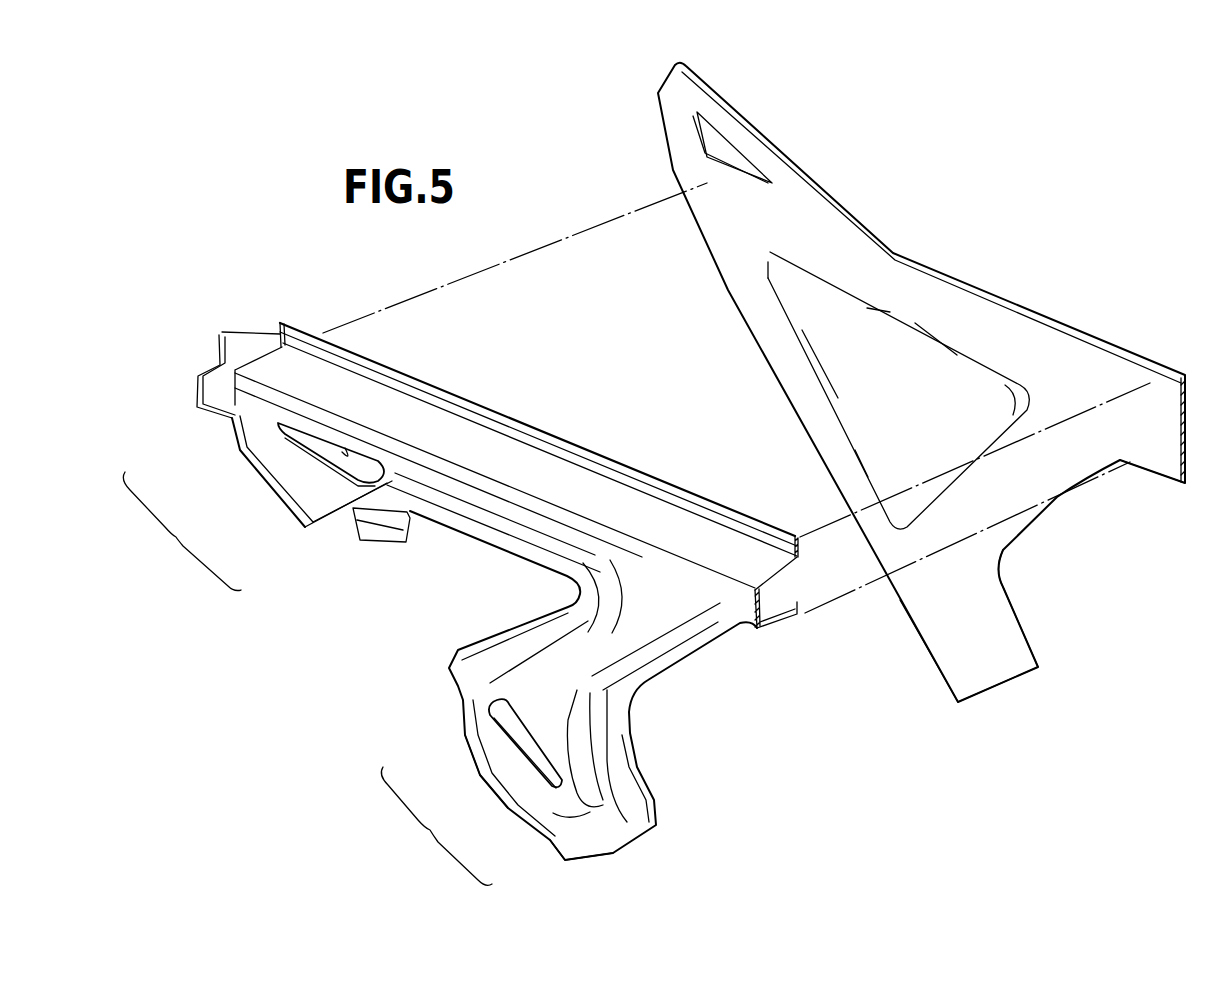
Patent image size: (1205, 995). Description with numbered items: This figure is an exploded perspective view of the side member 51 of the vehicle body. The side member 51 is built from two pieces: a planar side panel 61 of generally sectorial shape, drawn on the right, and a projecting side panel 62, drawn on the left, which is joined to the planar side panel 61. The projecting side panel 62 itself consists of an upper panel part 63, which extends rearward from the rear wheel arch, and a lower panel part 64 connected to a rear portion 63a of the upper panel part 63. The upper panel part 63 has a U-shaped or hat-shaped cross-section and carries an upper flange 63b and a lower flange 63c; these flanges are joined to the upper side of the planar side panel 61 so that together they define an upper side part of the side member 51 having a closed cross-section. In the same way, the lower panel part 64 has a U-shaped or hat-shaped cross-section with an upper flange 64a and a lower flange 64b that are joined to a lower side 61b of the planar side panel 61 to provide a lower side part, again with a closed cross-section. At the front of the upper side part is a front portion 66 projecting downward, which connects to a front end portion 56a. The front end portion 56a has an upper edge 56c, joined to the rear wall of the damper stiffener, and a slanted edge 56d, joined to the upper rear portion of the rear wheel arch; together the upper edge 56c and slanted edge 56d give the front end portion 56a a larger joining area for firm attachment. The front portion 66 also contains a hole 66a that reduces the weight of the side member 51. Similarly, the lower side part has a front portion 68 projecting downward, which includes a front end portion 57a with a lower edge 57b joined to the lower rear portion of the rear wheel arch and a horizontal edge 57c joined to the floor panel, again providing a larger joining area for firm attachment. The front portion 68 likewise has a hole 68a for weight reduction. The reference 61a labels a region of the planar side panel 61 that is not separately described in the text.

The side member 51 is at (944, 104).
The planar side panel 61 is at (953, 330).
The flange portion of plate member 61a is at (1030, 333).
The lower side 61b is at (913, 597).
The projecting side panel 62 is at (483, 545).
The upper panel part 63 is at (477, 448).
The rear portion 63a is at (710, 547).
The upper flange 63b is at (547, 445).
The lower flange 63c is at (440, 515).
The lower panel part 64 is at (636, 633).
The upper flange 64a is at (507, 640).
The lower flange 64b is at (633, 783).
The front portion 66 is at (327, 502).
The hole 66a is at (345, 452).
The front portion 68 is at (487, 743).
The hole 68a is at (497, 710).
The front end portion 56a is at (182, 531).
The upper edge 56c is at (207, 398).
The slanted edge 56d is at (300, 502).
The front end portion 57a is at (435, 826).
The lower edge 57b is at (477, 767).
The horizontal edge 57c is at (577, 848).